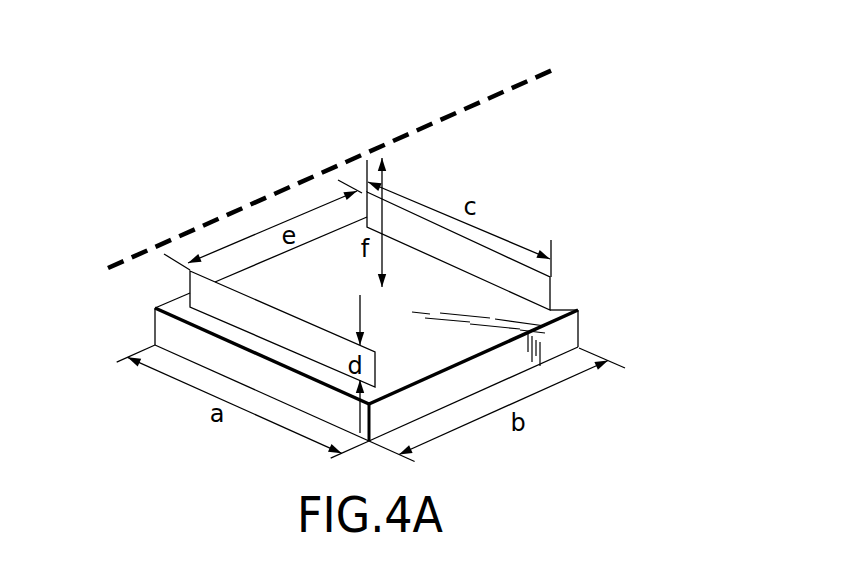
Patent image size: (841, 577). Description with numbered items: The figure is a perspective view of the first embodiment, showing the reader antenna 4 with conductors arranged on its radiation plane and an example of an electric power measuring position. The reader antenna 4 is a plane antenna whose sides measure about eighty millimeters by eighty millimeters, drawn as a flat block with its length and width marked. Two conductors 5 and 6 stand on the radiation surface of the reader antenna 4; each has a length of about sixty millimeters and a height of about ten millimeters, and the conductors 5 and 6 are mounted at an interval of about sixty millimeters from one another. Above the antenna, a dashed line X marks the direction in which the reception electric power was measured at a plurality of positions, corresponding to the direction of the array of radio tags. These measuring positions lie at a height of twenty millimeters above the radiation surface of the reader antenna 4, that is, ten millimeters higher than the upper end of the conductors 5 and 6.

The reader antenna 4 is at (570, 333).
The conductor 5 is at (376, 363).
The conductor 6 is at (551, 290).
The dashed line X is at (262, 197).